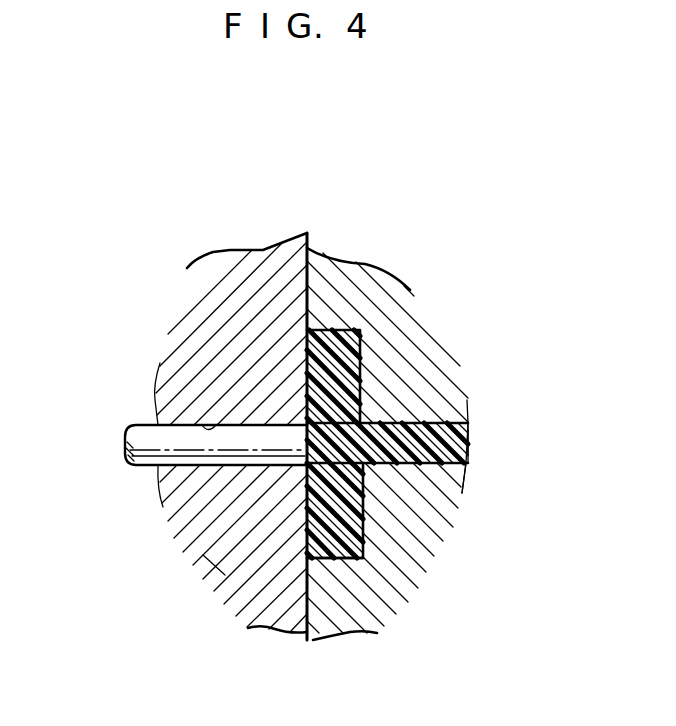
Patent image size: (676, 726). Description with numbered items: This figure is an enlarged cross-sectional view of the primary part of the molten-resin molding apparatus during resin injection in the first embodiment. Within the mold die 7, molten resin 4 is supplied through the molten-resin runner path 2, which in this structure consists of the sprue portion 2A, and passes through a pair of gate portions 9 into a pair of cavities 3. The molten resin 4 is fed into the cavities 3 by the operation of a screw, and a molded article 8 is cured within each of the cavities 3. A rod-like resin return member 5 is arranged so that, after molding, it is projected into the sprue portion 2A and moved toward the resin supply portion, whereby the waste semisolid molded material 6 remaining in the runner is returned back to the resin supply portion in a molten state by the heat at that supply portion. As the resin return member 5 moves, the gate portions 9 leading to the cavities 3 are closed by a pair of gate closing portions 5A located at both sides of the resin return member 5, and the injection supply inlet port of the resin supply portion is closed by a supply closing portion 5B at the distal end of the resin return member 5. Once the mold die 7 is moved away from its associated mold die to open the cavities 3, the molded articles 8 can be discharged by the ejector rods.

The mold die 7 is at (209, 270).
The cavities 3 is at (345, 327).
The gate portions 9 is at (362, 390).
The waste semisolid molded material 6 is at (423, 421).
The molten resin 4 is at (468, 432).
The sprue portion 2A is at (472, 450).
The molten-resin runner path 2 is at (462, 487).
The molded article 8 is at (346, 560).
The resin return member 5 is at (140, 463).
The gate closing portions 5A is at (210, 430).
The supply closing portion 5B is at (203, 555).